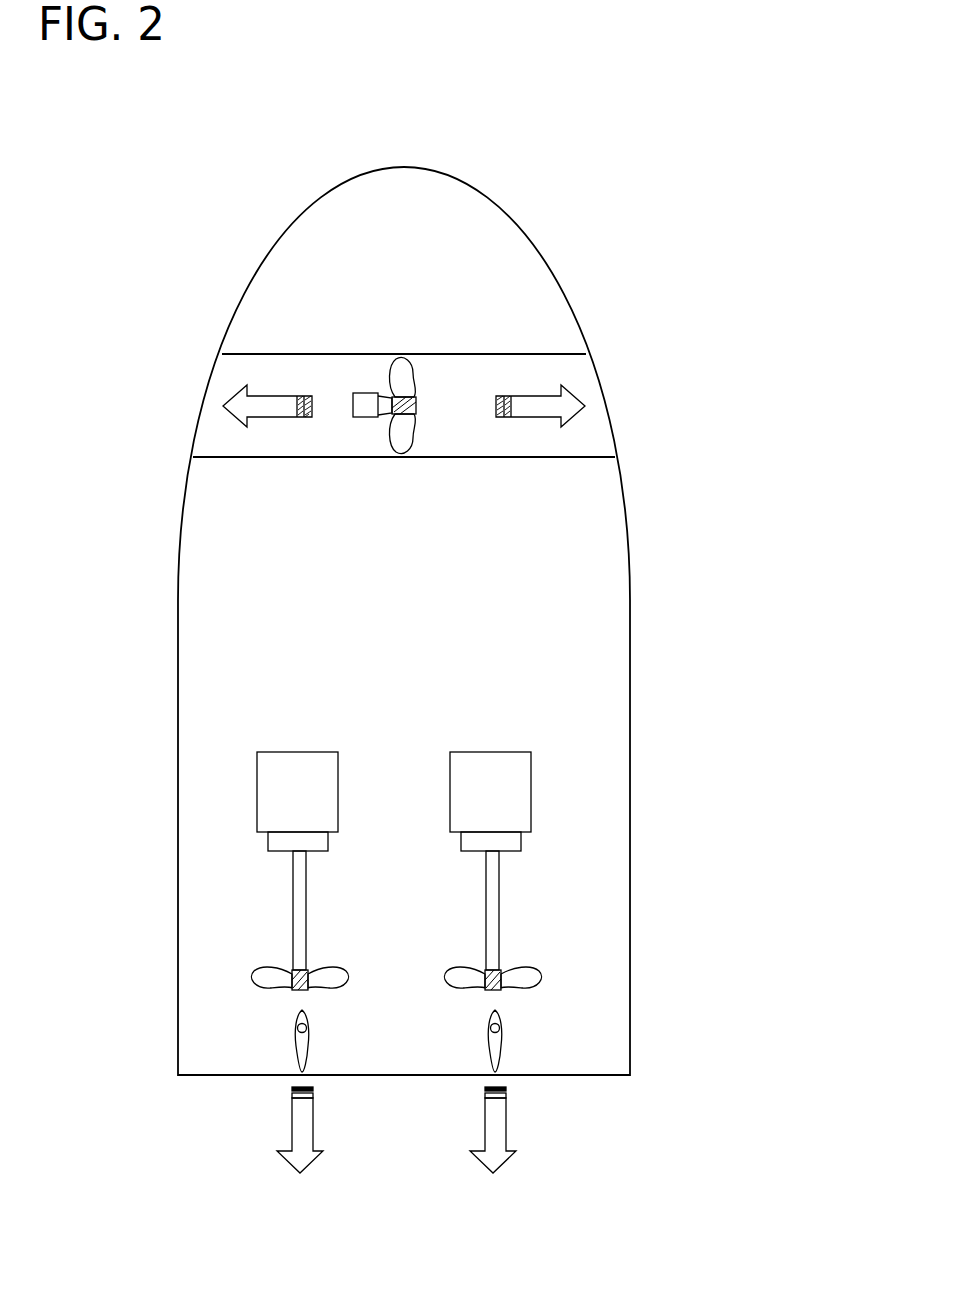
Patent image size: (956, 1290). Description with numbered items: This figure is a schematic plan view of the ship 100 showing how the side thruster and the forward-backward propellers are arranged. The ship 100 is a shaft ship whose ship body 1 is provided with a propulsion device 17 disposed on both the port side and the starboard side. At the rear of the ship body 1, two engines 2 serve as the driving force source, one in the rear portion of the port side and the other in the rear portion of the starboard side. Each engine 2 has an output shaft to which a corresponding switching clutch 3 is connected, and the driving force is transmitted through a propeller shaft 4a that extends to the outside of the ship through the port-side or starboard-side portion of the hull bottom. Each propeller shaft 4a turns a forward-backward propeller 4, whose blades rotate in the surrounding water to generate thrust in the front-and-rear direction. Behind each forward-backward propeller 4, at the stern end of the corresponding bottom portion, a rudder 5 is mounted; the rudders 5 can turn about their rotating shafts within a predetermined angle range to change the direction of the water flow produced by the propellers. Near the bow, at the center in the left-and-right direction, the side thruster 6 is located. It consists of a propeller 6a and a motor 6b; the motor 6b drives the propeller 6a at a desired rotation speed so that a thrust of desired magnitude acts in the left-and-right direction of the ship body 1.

The ship 100 is at (675, 184).
The ship body 1 is at (383, 182).
The engines 2 is at (257, 785).
The switching clutches 3 is at (270, 843).
The forward-backward propellers 4 is at (252, 977).
The propeller shafts 4a is at (293, 906).
The rudders 5 is at (296, 1045).
The side thruster 6 is at (404, 402).
The propeller 6a is at (400, 453).
The motor 6b is at (366, 392).
The propulsion device 17 is at (398, 962).